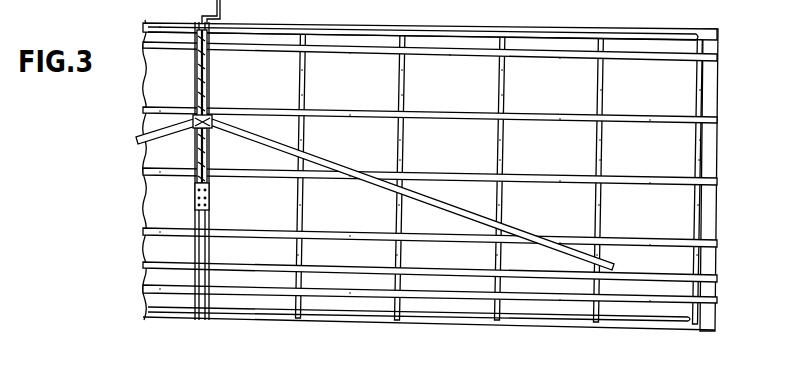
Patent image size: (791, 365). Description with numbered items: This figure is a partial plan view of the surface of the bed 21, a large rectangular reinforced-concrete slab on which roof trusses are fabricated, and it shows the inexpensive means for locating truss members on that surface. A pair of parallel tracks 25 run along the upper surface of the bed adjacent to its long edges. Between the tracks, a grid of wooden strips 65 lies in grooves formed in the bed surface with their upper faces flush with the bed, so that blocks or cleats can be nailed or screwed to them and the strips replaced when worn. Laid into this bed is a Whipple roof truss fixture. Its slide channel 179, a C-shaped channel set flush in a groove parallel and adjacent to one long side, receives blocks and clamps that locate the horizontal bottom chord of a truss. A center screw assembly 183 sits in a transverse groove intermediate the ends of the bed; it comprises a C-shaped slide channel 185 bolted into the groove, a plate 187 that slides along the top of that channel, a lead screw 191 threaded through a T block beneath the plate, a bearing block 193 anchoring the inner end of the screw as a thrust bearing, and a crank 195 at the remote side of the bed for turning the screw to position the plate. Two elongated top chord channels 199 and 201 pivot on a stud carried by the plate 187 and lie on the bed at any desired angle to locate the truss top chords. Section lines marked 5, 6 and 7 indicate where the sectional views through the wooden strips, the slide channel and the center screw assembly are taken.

The bed 21 is at (724, 105).
The tracks 25 is at (571, 32).
The wooden strips 65 is at (697, 93).
The slide channel 179 is at (355, 272).
The center screw assembly 183 is at (217, 95).
The slide channel 185 is at (200, 97).
The plate 187 is at (257, 128).
The lead screw 191 is at (205, 70).
The bearing block 193 is at (210, 197).
The crank 195 is at (221, 7).
The top chord channel 199 is at (135, 135).
The top chord channel 201 is at (515, 229).
The section line 5 is at (690, 215).
The section line 6 is at (436, 260).
The section line 7 is at (193, 158).